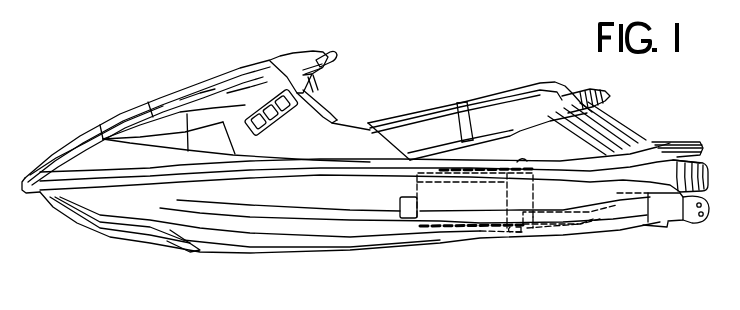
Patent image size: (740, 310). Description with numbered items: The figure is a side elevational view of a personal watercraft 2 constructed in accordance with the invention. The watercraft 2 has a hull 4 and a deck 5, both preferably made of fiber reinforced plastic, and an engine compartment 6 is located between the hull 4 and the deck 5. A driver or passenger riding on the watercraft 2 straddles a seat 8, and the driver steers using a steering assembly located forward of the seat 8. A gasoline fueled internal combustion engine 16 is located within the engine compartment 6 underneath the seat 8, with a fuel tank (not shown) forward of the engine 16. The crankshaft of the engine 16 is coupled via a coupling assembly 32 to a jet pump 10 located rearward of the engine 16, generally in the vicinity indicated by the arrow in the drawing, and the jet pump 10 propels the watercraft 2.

The personal watercraft 2 is at (176, 55).
The hull 4 is at (175, 233).
The deck 5 is at (85, 138).
The engine compartment 6 is at (340, 207).
The seat 8 is at (487, 122).
The jet pump 10 is at (679, 229).
The engine 16 is at (430, 217).
The coupling assembly 32 is at (551, 226).